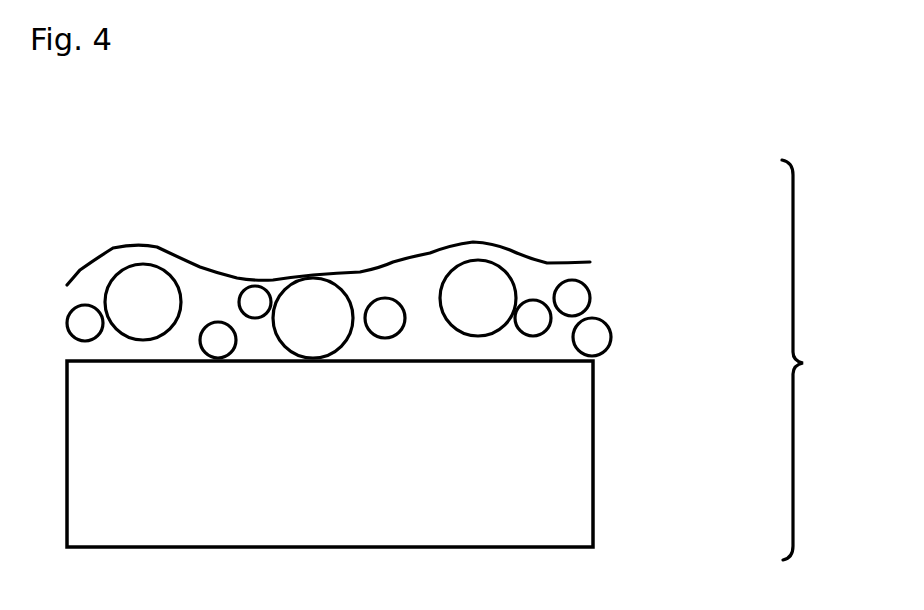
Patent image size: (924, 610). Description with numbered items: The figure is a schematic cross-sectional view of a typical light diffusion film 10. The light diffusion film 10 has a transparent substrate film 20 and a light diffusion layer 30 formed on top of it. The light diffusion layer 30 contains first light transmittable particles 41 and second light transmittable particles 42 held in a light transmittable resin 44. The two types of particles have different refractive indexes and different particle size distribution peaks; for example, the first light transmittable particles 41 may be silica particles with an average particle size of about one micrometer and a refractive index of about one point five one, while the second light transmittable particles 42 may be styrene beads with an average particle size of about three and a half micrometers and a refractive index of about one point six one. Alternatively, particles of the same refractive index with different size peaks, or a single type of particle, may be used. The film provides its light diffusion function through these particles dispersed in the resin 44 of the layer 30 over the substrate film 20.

The light diffusion film 10 is at (821, 360).
The transparent substrate film 20 is at (496, 472).
The light diffusion layer 30 is at (400, 267).
The first light transmittable particles 41 is at (488, 284).
The second light transmittable particles 42 is at (265, 284).
The light transmittable resin 44 is at (418, 278).